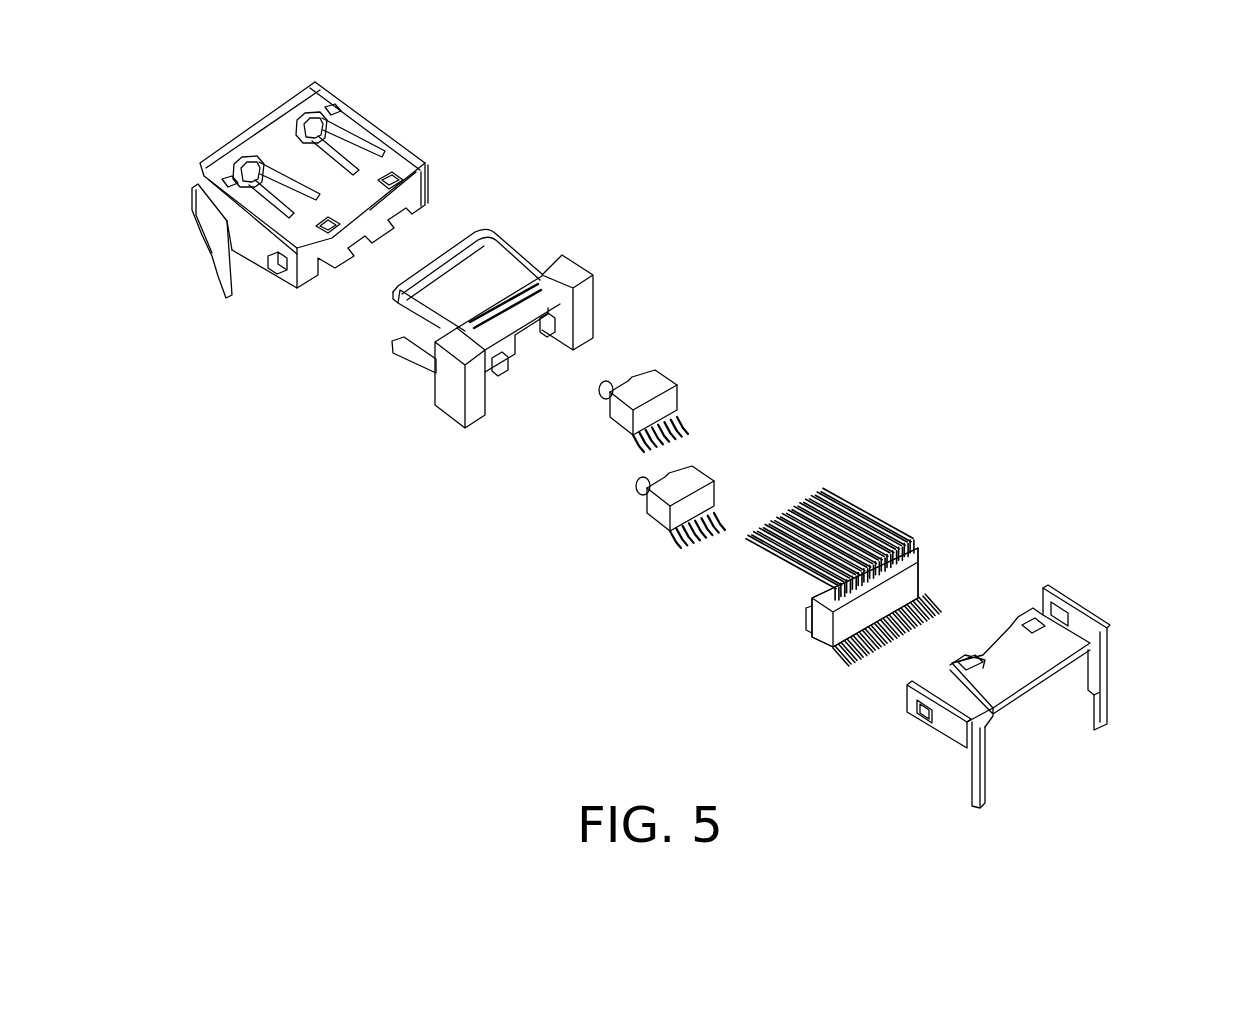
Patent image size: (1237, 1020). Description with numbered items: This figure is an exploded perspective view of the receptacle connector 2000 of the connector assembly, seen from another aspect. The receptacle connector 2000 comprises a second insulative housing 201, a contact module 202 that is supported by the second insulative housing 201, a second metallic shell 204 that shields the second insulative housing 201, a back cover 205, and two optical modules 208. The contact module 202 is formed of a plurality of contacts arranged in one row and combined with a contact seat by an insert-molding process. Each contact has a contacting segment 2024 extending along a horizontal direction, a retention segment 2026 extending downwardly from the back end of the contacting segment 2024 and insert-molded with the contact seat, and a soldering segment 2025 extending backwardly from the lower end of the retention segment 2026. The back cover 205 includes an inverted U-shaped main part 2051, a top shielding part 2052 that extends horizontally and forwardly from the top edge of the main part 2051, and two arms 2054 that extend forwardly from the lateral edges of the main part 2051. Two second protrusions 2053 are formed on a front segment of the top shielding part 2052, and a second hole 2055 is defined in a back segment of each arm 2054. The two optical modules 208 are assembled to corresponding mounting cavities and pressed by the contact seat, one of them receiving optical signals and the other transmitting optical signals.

The receptacle connector 2000 is at (1215, 565).
The second metallic shell 204 is at (388, 108).
The second insulative housing 201 is at (583, 238).
The optical modules 208 is at (657, 553).
The contact module 202 is at (887, 546).
The contacting segment 2024 is at (846, 500).
The soldering segment 2025 is at (920, 598).
The retention segment 2026 is at (910, 545).
The back cover 205 is at (1000, 686).
The main part 2051 is at (1027, 717).
The top shielding part 2052 is at (1018, 657).
The second protrusions 2053 is at (958, 667).
The arms 2054 is at (948, 727).
The second hole 2055 is at (918, 715).